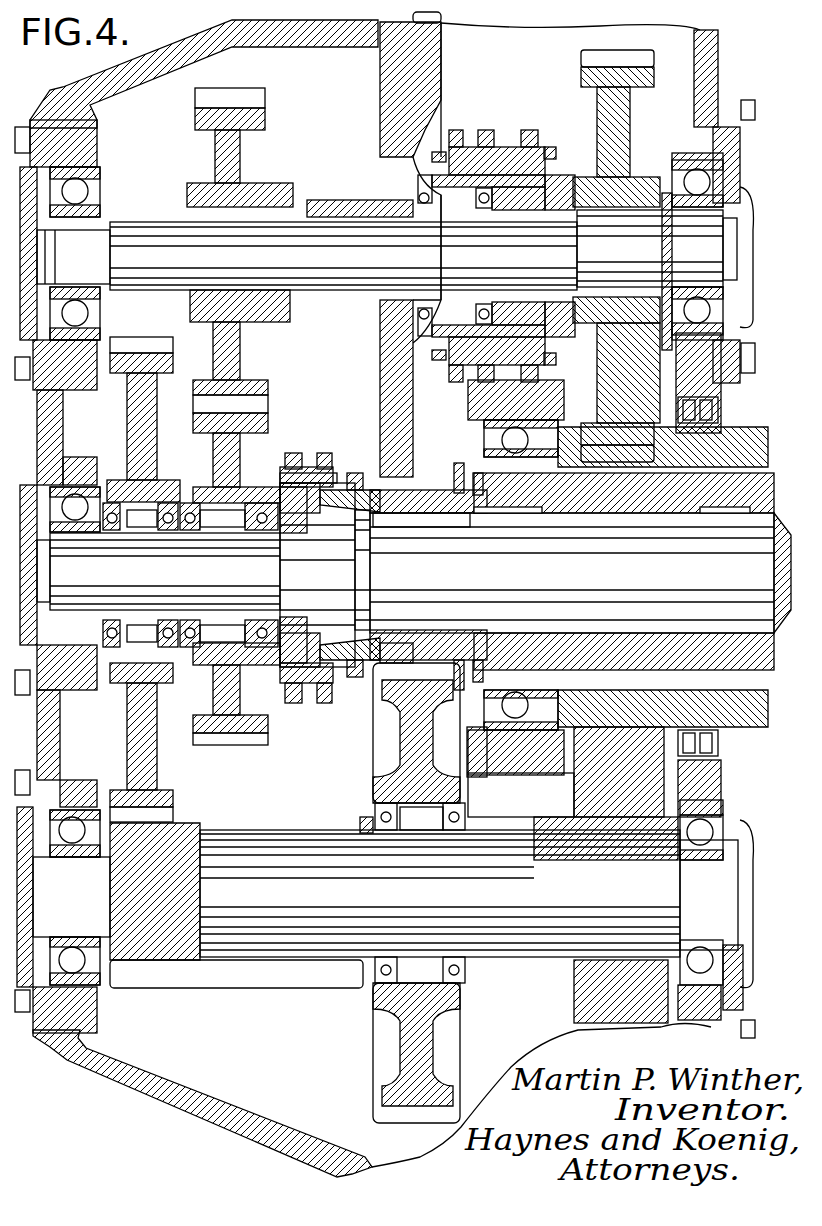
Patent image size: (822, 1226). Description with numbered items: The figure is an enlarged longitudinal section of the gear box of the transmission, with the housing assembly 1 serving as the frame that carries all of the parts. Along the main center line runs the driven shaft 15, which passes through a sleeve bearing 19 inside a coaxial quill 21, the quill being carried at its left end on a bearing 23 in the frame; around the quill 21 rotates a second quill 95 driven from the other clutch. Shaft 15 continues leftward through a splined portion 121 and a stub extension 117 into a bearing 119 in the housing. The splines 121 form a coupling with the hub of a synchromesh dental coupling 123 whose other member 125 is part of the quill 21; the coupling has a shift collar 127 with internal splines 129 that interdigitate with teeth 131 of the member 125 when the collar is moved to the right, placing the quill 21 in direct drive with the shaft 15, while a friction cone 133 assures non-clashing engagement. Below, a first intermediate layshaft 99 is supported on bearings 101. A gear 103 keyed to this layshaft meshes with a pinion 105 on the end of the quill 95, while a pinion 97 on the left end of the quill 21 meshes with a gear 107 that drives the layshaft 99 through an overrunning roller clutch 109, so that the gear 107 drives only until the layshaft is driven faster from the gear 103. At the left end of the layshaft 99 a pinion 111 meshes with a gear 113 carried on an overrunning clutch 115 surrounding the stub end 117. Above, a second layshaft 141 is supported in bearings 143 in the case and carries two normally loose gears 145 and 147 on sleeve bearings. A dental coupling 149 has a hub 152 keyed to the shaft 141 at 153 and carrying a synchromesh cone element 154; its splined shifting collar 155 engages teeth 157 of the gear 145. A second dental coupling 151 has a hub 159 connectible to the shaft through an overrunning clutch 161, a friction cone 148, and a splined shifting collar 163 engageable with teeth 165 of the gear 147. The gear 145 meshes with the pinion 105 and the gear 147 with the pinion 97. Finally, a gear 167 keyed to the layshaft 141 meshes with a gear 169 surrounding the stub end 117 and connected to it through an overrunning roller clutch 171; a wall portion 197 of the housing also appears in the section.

The housing assembly 1 is at (172, 62).
The driven shaft 15 is at (556, 582).
The sleeve bearing 19 is at (427, 528).
The quill 21 is at (676, 514).
The bearing 23 is at (500, 440).
The quill 95 is at (736, 428).
The pinion 97 is at (460, 480).
The first intermediate layshaft 99 is at (322, 902).
The bearings 101 is at (75, 845).
The gear 103 is at (590, 775).
The pinion 105 is at (580, 440).
The gear 107 is at (392, 768).
The overrunning roller clutch 109 is at (424, 832).
The pinion 111 is at (170, 985).
The gear 113 is at (170, 338).
The overrunning clutch 115 is at (142, 530).
The stub extension 117 is at (192, 580).
The bearing 119 is at (75, 494).
The splined portion 121 is at (360, 582).
The synchromesh dental coupling 123 is at (322, 434).
The driven member 125 is at (370, 488).
The shift collar 127 is at (323, 453).
The internal splines 129 is at (281, 466).
The teeth 131 is at (354, 472).
The friction cone 133 is at (366, 545).
The second layshaft 141 is at (252, 264).
The bearings 143 is at (90, 190).
The gear 145 is at (605, 52).
The gear 147 is at (441, 28).
The friction cone 148 is at (428, 205).
The synchromesh dental coupling 149 is at (545, 91).
The synchromesh dental coupling 151 is at (479, 97).
The hub 152 is at (520, 210).
The key 153 is at (640, 258).
The synchromesh cone element 154 is at (552, 212).
The splined shifting collar 155 is at (528, 130).
The teeth 157 is at (555, 147).
The hub 159 is at (478, 208).
The overrunning clutch 161 is at (460, 214).
The splined shifting collar 163 is at (455, 130).
The teeth 165 is at (436, 152).
The gear 167 is at (258, 98).
The gear 169 is at (262, 420).
The overrunning roller clutch 171 is at (230, 530).
The housing wall 197 is at (418, 440).